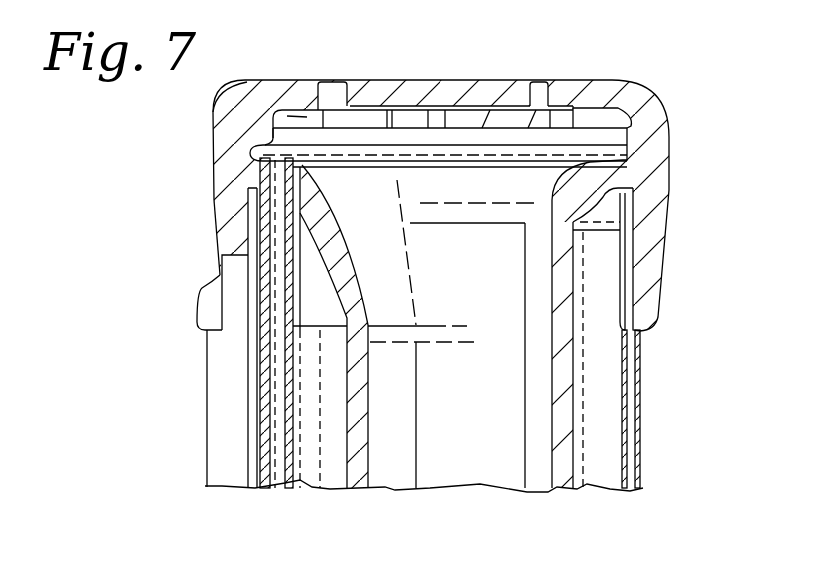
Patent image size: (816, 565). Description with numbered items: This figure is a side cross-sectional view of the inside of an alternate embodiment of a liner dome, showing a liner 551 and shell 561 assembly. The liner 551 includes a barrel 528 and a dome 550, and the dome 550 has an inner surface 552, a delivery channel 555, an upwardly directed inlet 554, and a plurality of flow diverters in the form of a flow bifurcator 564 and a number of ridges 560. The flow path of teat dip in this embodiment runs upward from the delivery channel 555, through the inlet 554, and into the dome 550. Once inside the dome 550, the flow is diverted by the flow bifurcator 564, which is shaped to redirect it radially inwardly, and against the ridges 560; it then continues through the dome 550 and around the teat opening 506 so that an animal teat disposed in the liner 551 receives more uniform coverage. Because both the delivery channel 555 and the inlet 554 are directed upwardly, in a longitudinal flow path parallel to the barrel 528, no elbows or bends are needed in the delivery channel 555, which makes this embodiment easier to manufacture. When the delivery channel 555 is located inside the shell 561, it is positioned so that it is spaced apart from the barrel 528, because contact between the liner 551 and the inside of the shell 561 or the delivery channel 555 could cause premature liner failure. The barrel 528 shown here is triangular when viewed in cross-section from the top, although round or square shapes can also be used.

The teat opening 506 is at (455, 87).
The barrel 528 is at (563, 436).
The dome 550 is at (683, 157).
The liner 551 is at (315, 499).
The inner surface 552 is at (580, 110).
The inlet 554 is at (254, 144).
The delivery channel 555 is at (275, 229).
The ridges 560 is at (358, 118).
The shell 561 is at (637, 357).
The flow bifurcator 564 is at (300, 113).